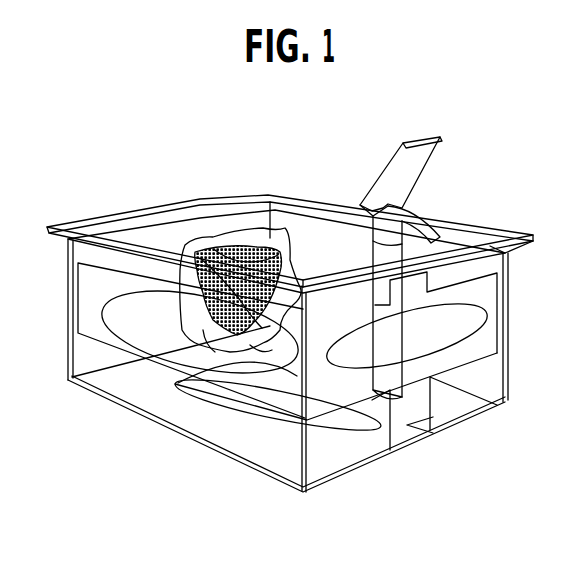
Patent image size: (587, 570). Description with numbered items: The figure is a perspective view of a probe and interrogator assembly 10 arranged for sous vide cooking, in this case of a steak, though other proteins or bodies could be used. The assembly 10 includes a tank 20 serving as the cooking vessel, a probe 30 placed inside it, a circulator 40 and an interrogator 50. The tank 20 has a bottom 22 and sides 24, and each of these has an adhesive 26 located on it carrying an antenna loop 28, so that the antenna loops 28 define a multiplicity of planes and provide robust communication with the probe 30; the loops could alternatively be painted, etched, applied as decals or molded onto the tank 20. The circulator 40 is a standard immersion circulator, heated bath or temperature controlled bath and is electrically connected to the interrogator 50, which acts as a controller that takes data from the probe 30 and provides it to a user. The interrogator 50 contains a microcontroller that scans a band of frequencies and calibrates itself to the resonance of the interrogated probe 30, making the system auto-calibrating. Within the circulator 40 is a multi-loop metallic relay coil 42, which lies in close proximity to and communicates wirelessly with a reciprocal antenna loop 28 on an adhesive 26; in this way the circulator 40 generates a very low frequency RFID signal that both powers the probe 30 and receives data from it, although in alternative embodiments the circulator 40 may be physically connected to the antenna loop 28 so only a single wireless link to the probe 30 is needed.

The probe and interrogator assembly 10 is at (115, 484).
The tank 20 is at (70, 227).
The bottom 22 is at (67, 303).
The sides 24 is at (223, 433).
The adhesives 26 is at (443, 373).
The antenna loops 28 is at (262, 386).
The probe 30 is at (305, 270).
The circulator 40 is at (507, 255).
The relay coil 42 is at (438, 237).
The interrogator 50 is at (417, 147).